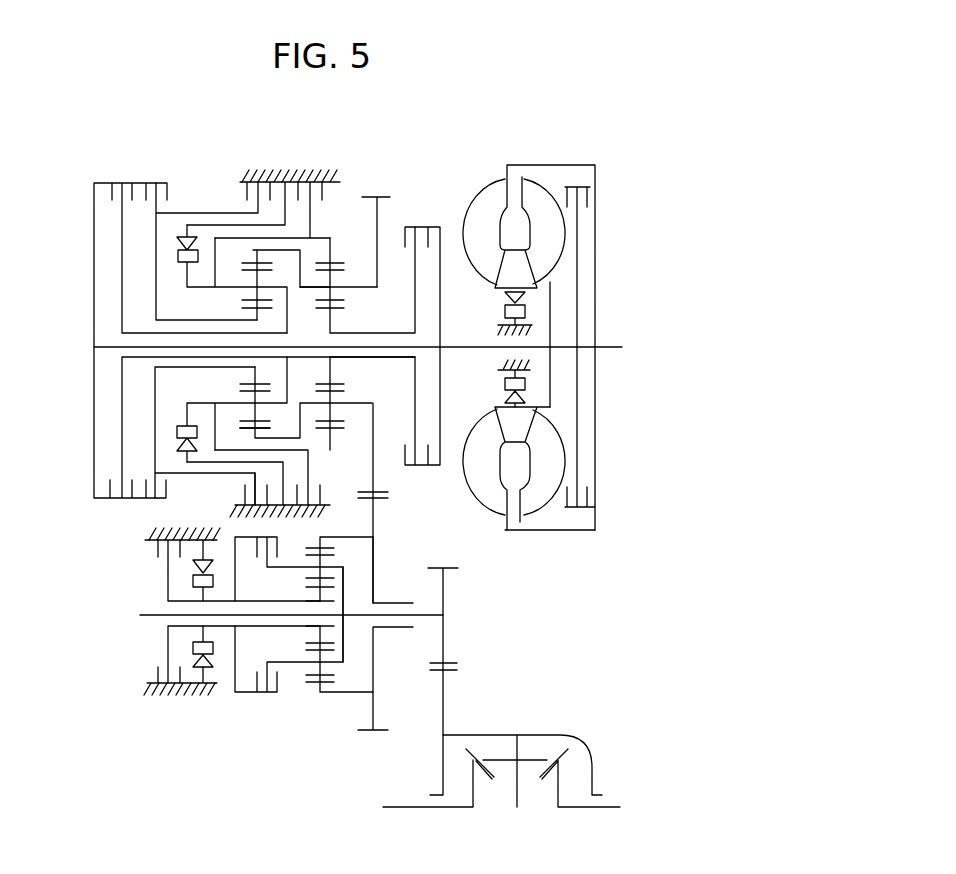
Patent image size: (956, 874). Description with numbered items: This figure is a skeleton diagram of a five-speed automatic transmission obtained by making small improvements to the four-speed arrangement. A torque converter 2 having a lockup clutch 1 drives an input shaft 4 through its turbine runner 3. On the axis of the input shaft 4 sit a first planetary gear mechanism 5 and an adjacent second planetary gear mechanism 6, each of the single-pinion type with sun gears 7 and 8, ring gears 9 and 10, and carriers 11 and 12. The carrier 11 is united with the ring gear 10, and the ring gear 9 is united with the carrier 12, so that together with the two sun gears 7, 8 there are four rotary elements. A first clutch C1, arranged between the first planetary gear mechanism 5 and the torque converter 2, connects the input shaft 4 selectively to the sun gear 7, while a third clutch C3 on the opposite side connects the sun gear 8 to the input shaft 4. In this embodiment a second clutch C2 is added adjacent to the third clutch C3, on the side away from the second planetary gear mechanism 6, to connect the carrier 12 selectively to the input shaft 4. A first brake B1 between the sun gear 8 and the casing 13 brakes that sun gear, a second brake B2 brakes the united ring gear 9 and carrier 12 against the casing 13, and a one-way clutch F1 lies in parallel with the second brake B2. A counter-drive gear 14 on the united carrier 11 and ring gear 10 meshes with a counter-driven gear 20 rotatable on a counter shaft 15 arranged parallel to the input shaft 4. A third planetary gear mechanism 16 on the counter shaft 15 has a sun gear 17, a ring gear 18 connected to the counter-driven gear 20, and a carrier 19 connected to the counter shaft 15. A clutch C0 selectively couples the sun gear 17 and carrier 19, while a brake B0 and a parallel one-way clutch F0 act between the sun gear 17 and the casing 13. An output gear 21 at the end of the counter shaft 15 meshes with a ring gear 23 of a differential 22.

The lockup clutch 1 is at (589, 202).
The torque converter 2 is at (525, 544).
The turbine runner 3 is at (551, 458).
The input shaft 4 is at (461, 347).
The first planetary gear mechanism 5 is at (360, 235).
The second planetary gear mechanism 6 is at (224, 296).
The sun gear 7 is at (338, 309).
The sun gear 8 is at (250, 380).
The ring gear 9 is at (343, 264).
The ring gear 10 is at (250, 431).
The carrier 11 is at (367, 288).
The carrier 12 is at (268, 405).
The casing 13 is at (285, 181).
The counter-drive gear 14 is at (378, 488).
The counter shaft 15 is at (156, 614).
The third planetary gear mechanism 16 is at (315, 719).
The sun gear 17 is at (310, 588).
The ring gear 18 is at (326, 693).
The carrier 19 is at (344, 574).
The counter-driven gear 20 is at (374, 512).
The output gear 21 is at (457, 663).
The differential 22 is at (553, 727).
The ring gear 23 is at (458, 672).
The first clutch C1 is at (427, 236).
The second clutch C2 is at (115, 181).
The third clutch C3 is at (157, 181).
The first brake B1 is at (246, 190).
The second brake B2 is at (323, 193).
The one-way clutch F1 is at (186, 236).
The multi-disc clutch C0 is at (266, 694).
The multi-disc brake B0 is at (157, 676).
The one-way clutch F0 is at (210, 662).